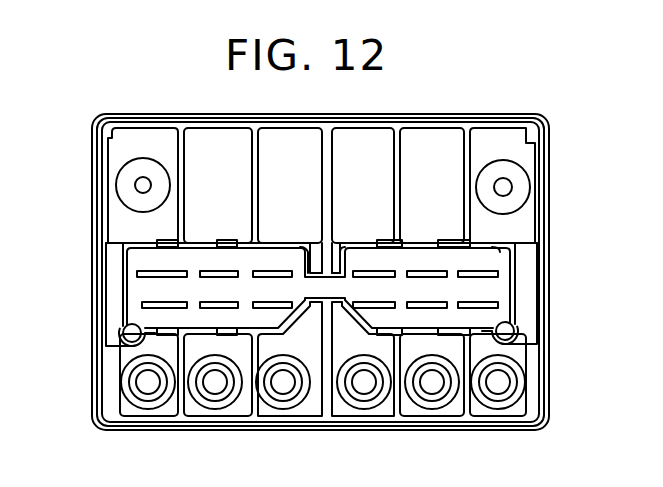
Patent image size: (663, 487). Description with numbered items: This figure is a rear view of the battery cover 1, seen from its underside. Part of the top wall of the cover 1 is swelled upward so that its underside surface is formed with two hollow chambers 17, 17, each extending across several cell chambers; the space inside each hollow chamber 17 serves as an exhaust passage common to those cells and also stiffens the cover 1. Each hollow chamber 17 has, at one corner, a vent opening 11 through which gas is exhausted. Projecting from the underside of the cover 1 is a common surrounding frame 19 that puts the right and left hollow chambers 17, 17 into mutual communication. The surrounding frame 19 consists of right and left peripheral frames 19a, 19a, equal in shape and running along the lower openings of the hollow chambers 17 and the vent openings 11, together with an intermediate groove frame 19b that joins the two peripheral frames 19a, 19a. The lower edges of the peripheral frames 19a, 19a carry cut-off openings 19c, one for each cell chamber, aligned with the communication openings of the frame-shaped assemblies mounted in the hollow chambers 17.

The battery cover 1 is at (87, 278).
The vent opening 11 is at (124, 333).
The hollow chamber 17 is at (135, 251).
The surrounding frame 19 is at (295, 241).
The peripheral frame 19a is at (200, 243).
The intermediate groove frame 19b is at (338, 268).
The cut-off opening 19c is at (156, 242).